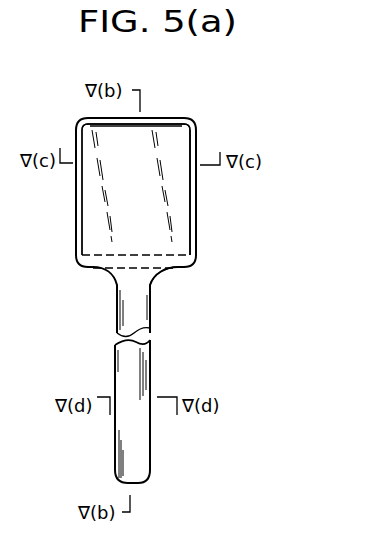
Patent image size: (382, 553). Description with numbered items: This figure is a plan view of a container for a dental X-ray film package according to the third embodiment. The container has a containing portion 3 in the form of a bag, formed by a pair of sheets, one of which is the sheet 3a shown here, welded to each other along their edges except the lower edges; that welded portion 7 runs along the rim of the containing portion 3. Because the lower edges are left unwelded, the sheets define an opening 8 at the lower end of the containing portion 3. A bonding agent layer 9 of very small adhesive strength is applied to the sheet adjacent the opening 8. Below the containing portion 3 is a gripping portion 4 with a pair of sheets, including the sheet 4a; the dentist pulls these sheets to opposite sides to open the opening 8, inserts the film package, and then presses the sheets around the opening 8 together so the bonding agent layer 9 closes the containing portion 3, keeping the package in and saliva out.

The containing portion 3 is at (73, 239).
The sheet 3a is at (194, 228).
The gripping portion 4 is at (114, 358).
The sheet 4a is at (152, 362).
The welded portion 7 is at (170, 119).
The opening 8 is at (182, 265).
The bonding agent layer 9 is at (103, 262).